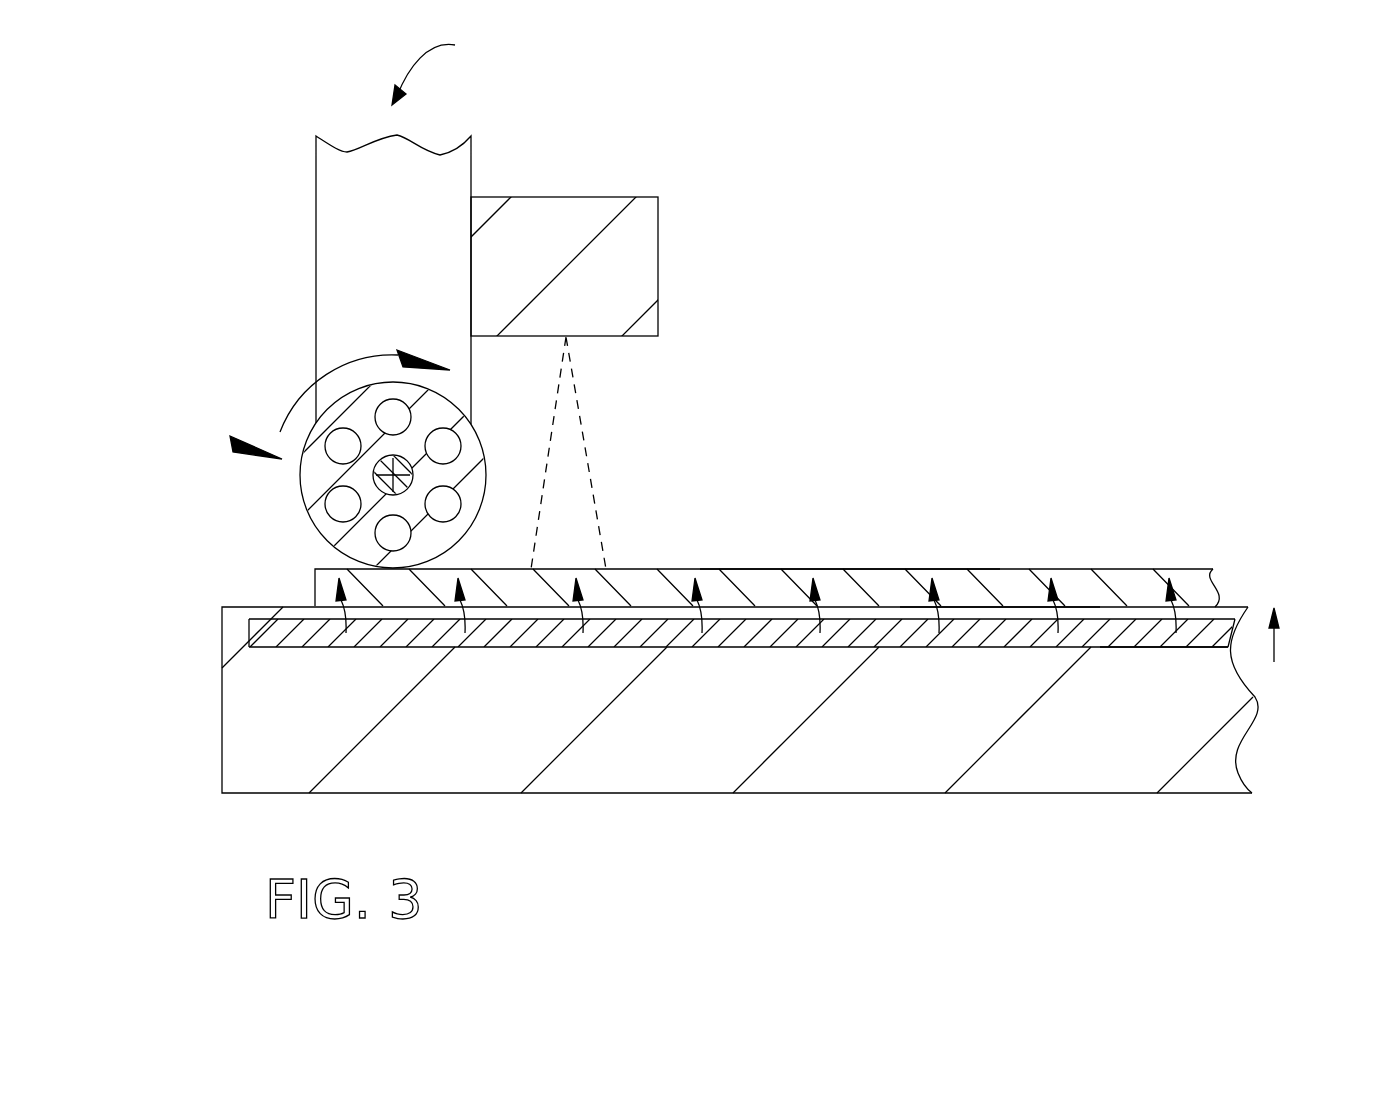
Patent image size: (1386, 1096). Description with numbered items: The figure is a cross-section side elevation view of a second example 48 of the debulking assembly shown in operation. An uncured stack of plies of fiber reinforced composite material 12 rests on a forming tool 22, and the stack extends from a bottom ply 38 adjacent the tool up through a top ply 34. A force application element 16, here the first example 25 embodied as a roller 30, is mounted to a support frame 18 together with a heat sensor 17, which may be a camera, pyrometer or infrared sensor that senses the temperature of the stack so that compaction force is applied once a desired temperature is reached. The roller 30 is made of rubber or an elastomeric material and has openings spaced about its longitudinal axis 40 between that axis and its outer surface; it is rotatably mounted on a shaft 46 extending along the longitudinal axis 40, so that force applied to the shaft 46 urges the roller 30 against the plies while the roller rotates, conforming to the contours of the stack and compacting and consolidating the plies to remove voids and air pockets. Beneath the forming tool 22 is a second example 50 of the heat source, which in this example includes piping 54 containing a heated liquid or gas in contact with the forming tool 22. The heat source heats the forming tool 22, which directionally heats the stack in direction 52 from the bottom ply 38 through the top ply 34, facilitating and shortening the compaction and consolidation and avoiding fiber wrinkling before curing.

The uncured stack of plies of fiber reinforced composite material 12 is at (1190, 583).
The force application element 16 is at (307, 528).
The heat sensor 17 is at (583, 236).
The support frame 18 is at (413, 198).
The forming tool 22 is at (1197, 732).
The first example of force application element 25 is at (232, 443).
The roller 30 is at (313, 488).
The top ply 34 is at (865, 568).
The bottom ply 38 is at (985, 608).
The longitudinal axis 40 is at (407, 490).
The shaft 46 is at (340, 546).
The second example of assembly for debulking 48 is at (445, 67).
The second example of heat source 50 is at (1213, 645).
The direction 52 is at (1275, 648).
The piping 54 is at (627, 633).